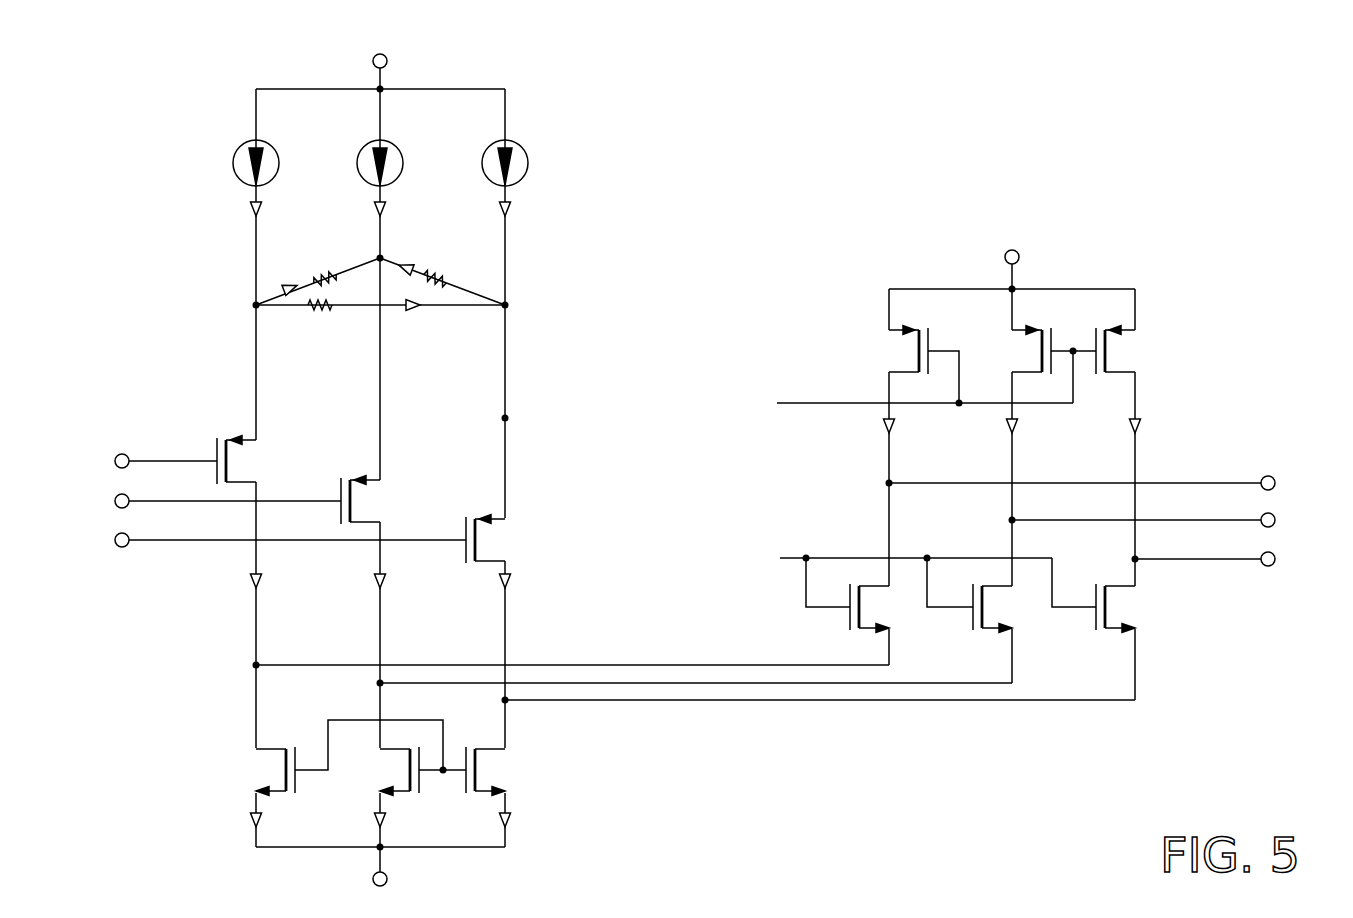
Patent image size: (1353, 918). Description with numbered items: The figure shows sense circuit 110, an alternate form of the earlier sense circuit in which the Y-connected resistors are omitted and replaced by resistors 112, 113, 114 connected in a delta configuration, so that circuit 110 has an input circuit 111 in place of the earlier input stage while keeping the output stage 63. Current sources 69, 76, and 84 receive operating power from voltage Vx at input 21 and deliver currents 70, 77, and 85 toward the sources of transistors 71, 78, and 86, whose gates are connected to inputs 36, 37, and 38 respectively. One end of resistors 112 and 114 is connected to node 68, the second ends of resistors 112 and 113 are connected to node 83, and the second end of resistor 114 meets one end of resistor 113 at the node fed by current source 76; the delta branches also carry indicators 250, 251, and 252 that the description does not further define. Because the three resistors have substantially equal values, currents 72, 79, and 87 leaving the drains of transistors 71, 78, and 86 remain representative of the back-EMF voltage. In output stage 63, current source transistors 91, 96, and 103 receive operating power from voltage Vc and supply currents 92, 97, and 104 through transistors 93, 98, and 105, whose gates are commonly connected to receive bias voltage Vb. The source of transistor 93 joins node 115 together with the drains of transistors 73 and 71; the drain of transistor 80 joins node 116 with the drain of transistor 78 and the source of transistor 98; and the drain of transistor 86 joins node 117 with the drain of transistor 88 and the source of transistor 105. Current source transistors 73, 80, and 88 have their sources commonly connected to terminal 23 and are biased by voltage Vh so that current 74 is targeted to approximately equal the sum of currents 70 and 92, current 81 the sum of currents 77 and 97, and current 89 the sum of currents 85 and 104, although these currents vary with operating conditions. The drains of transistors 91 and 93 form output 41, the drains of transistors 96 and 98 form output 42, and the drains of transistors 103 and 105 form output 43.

The input 21 is at (393, 61).
The terminal 23 is at (390, 880).
The input 36 is at (120, 454).
The input 37 is at (120, 494).
The input 38 is at (120, 533).
The output 41 is at (1274, 474).
The output 42 is at (1274, 512).
The output 43 is at (1274, 552).
The output stage 63 is at (1128, 246).
The node 68 is at (250, 306).
The current source 69 is at (232, 163).
The current 70 is at (250, 210).
The transistor 71 is at (253, 462).
The current 72 is at (250, 581).
The current source transistor 73 is at (265, 767).
The current 74 is at (250, 822).
The current source 76 is at (356, 163).
The current 77 is at (374, 210).
The transistor 78 is at (375, 502).
The current 79 is at (374, 581).
The current source transistor 80 is at (400, 795).
The current 81 is at (375, 820).
The node 83 is at (510, 306).
The current source 84 is at (481, 163).
The current 85 is at (512, 210).
The transistor 86 is at (498, 543).
The current 87 is at (510, 581).
The current source transistor 88 is at (500, 767).
The current 89 is at (512, 822).
The current source transistor 91 is at (897, 360).
The current 92 is at (882, 427).
The transistor 93 is at (893, 612).
The current source transistor 96 is at (1015, 360).
The current 97 is at (1005, 427).
The transistor 98 is at (1015, 612).
The current source transistor 103 is at (1133, 354).
The current 104 is at (1128, 427).
The transistor 105 is at (1138, 612).
The sense circuit 110 is at (840, 837).
The input circuit 111 is at (522, 52).
The resistor 112 is at (320, 312).
The resistor 113 is at (440, 270).
The resistor 114 is at (322, 270).
The node 115 is at (250, 665).
The node 116 is at (390, 683).
The node 117 is at (508, 705).
The current 250 is at (285, 290).
The current 251 is at (412, 312).
The current 252 is at (405, 258).